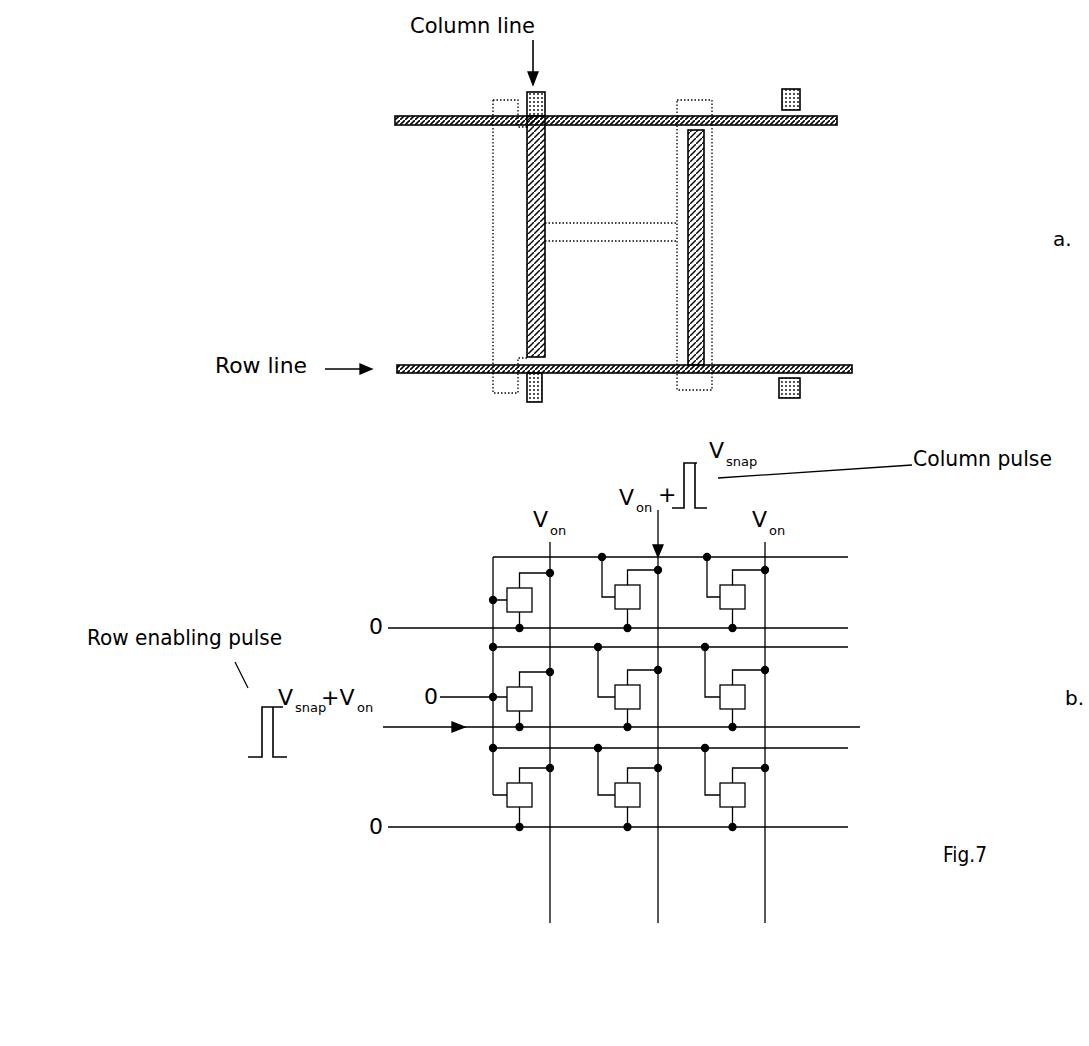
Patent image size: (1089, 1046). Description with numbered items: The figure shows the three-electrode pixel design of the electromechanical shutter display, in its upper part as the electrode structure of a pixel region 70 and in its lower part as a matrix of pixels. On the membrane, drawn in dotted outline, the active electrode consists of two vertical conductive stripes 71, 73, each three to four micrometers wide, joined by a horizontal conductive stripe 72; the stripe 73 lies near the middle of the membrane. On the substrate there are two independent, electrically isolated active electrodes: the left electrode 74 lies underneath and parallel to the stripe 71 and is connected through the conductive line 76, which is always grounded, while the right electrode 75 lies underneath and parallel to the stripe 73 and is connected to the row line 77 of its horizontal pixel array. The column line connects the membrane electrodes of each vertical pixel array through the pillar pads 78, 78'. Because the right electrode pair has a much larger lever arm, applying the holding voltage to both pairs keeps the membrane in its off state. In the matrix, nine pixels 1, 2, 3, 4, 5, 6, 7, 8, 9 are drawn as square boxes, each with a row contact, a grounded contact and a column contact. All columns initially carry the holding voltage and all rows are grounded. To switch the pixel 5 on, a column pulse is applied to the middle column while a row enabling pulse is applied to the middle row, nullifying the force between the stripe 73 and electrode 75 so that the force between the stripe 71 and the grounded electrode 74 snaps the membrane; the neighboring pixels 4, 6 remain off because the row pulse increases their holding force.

The pixel array region 70 is at (880, 93).
The vertical conductive stripe 71 is at (512, 170).
The horizontal conductive stripe 72 is at (593, 233).
The vertical conductive stripe 73 is at (690, 105).
The left electrode 74 is at (545, 305).
The right electrode 75 is at (690, 325).
The conductive line 76 is at (408, 125).
The row line 77 is at (400, 375).
The pillar pad 78 is at (560, 77).
The pillar pad 78' is at (558, 409).
The pixel 1 is at (513, 601).
The pixel 2 is at (621, 593).
The pixel 3 is at (727, 593).
The pixel 4 is at (497, 687).
The pixel 5 is at (619, 687).
The pixel 6 is at (726, 687).
The pixel 7 is at (513, 788).
The pixel 8 is at (619, 788).
The pixel 9 is at (726, 788).